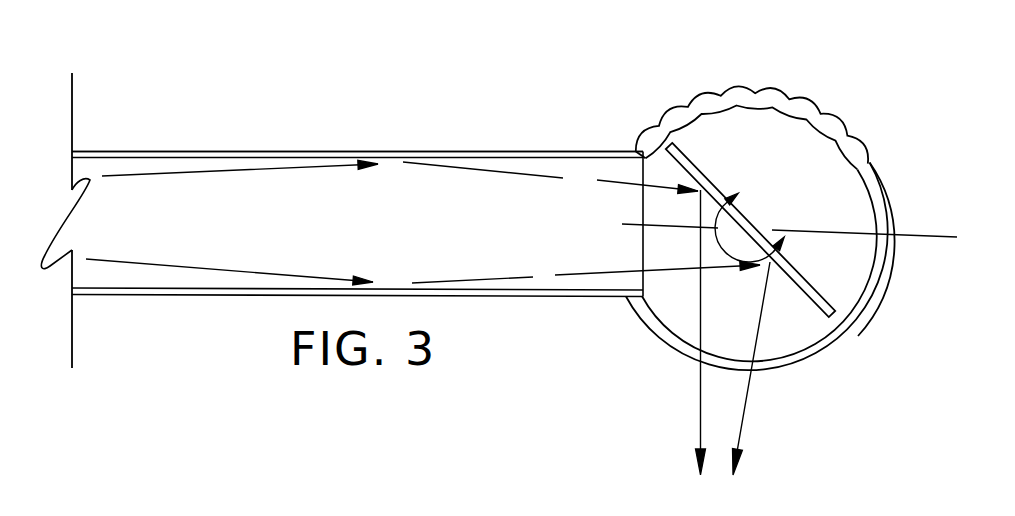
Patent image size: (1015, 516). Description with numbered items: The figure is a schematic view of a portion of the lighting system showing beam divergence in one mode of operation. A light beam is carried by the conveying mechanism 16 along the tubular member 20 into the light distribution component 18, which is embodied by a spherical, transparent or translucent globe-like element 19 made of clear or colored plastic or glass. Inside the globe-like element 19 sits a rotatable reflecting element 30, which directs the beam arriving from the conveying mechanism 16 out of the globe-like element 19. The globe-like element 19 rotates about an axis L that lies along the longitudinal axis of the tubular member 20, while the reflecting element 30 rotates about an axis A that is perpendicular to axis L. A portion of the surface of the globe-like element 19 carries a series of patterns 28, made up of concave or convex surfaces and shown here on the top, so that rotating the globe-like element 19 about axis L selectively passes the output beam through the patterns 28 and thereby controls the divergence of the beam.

The conveying mechanism 16 is at (325, 158).
The tubular member 20 is at (480, 152).
The patterns 28 is at (800, 106).
The reflecting element 30 is at (737, 213).
The light distribution component 18 is at (892, 204).
The globe-like element 19 is at (850, 307).
The axis of rotation of reflecting element A is at (757, 222).
The axis of rotation of globe-like element L is at (930, 238).